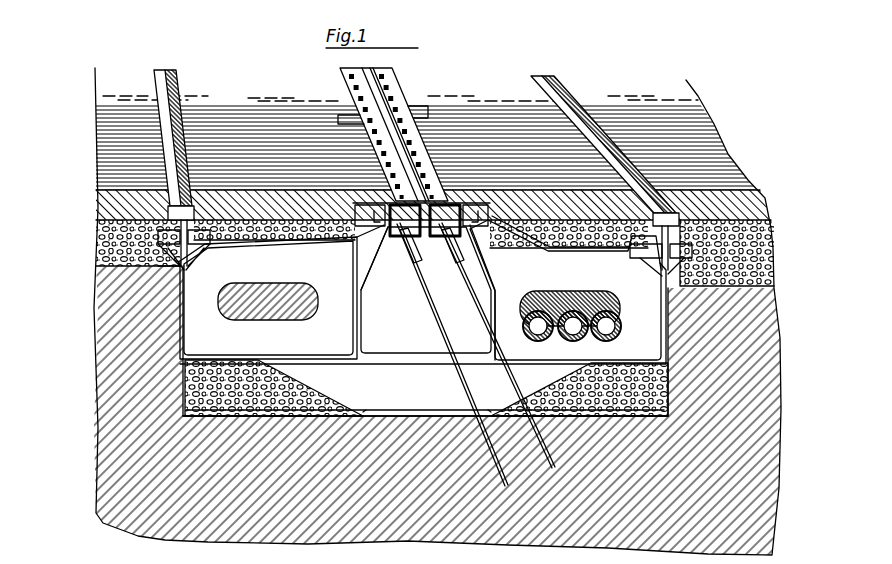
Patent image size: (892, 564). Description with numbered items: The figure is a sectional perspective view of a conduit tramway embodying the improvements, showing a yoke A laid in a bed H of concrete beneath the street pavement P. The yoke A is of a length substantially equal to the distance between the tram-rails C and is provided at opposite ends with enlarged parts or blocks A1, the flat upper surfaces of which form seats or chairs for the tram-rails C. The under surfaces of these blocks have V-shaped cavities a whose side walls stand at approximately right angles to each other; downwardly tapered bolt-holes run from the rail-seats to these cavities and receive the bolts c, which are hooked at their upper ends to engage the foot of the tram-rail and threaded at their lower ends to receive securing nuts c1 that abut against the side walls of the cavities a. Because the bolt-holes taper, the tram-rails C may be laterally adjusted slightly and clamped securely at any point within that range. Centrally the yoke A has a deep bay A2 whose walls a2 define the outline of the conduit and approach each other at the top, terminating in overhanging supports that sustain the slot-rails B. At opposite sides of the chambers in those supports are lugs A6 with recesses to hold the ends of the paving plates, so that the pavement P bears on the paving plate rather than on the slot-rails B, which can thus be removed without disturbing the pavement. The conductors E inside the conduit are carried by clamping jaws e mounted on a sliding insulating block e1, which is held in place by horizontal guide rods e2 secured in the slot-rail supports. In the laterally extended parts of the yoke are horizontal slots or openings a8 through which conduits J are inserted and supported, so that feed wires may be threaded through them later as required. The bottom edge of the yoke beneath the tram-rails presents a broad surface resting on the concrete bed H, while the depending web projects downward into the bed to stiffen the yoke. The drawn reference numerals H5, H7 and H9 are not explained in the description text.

The yoke A is at (268, 298).
The enlarged parts or blocks A1 is at (640, 256).
The deep bay A2 is at (426, 292).
The lugs A6 is at (478, 224).
The V-shaped cavities a is at (172, 264).
The walls of the bay a2 is at (380, 269).
The horizontal slots or openings a8 is at (284, 309).
The slot-rails B is at (363, 133).
The tram-rails C is at (168, 89).
The bolts c is at (202, 246).
The securing nuts c1 is at (654, 278).
The conductors E is at (460, 296).
The clamping jaws e is at (431, 246).
The sliding insulating block e1 is at (397, 233).
The horizontal guide rods e2 is at (446, 259).
The bed of concrete H is at (306, 380).
The housing bottom space H5 is at (427, 391).
The slot rail bracket H7 is at (329, 81).
The housing floor H9 is at (433, 405).
The conduits J is at (566, 282).
The street pavement P is at (252, 211).